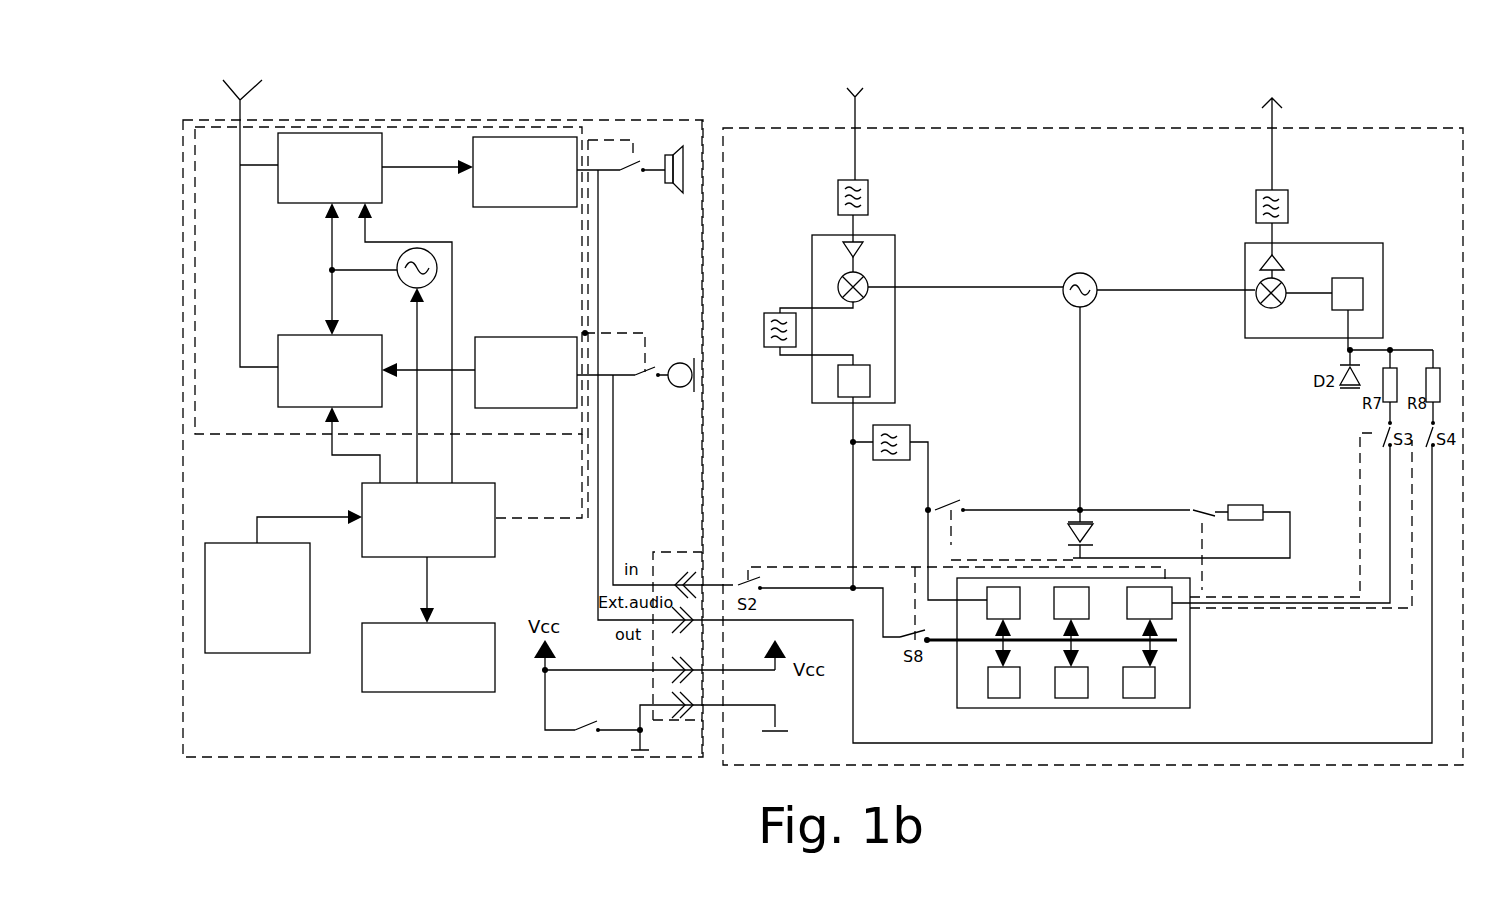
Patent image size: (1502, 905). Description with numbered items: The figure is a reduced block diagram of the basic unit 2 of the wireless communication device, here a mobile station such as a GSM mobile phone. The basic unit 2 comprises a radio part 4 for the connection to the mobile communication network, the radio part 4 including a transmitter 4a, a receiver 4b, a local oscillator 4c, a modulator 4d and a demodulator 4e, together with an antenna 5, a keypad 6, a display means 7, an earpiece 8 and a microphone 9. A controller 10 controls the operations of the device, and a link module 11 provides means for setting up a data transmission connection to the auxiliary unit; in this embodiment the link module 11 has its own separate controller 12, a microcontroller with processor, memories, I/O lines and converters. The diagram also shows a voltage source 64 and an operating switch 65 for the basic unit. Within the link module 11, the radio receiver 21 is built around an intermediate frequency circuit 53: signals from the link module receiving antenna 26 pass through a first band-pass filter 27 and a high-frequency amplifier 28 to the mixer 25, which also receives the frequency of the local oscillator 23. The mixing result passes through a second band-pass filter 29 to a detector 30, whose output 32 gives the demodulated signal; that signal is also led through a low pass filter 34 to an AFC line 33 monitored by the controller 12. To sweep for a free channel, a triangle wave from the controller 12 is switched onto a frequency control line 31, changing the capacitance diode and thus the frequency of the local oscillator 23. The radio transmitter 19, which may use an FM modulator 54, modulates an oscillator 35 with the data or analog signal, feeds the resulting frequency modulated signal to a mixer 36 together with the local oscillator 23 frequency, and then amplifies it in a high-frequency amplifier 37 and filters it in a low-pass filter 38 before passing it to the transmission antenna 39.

The basic unit 2 is at (330, 757).
The radio part 4 is at (232, 436).
The transmitter 4a is at (278, 388).
The receiver 4b is at (297, 203).
The local oscillator 4c is at (437, 267).
The modulator 4d is at (553, 337).
The demodulator 4e is at (473, 198).
The antenna 5 is at (255, 77).
The keypad 6 is at (250, 653).
The display means 7 is at (430, 692).
The earpiece 8 is at (667, 185).
The microphone 9 is at (680, 387).
The controller 10 is at (495, 540).
The link module 11 is at (1033, 765).
The controller 12 is at (1190, 680).
The radio transmitter 19 is at (1243, 225).
The radio receiver 21 is at (915, 262).
The local oscillator 23 is at (1075, 273).
The mixer 25 is at (838, 287).
The link module receiving antenna 26 is at (855, 108).
The first band-pass filter 27 is at (868, 195).
The amplifier 28 is at (843, 242).
The second band-pass filter 29 is at (768, 350).
The detector 30 is at (870, 380).
The frequency control line 31 is at (1292, 538).
The output of the detector 32 is at (853, 507).
The AFC line 33 is at (1033, 508).
The low pass filter 34 is at (905, 425).
The oscillator 35 is at (1363, 285).
The mixer 36 is at (1256, 290).
The high-frequency amplifier 37 is at (1258, 262).
The low-pass filter 38 is at (1288, 200).
The transmission antenna 39 is at (1272, 118).
The intermediate frequency circuit 53 is at (895, 328).
The FM modulator 54 is at (1245, 322).
The voltage source 64 is at (615, 718).
The power switch 65 is at (580, 735).